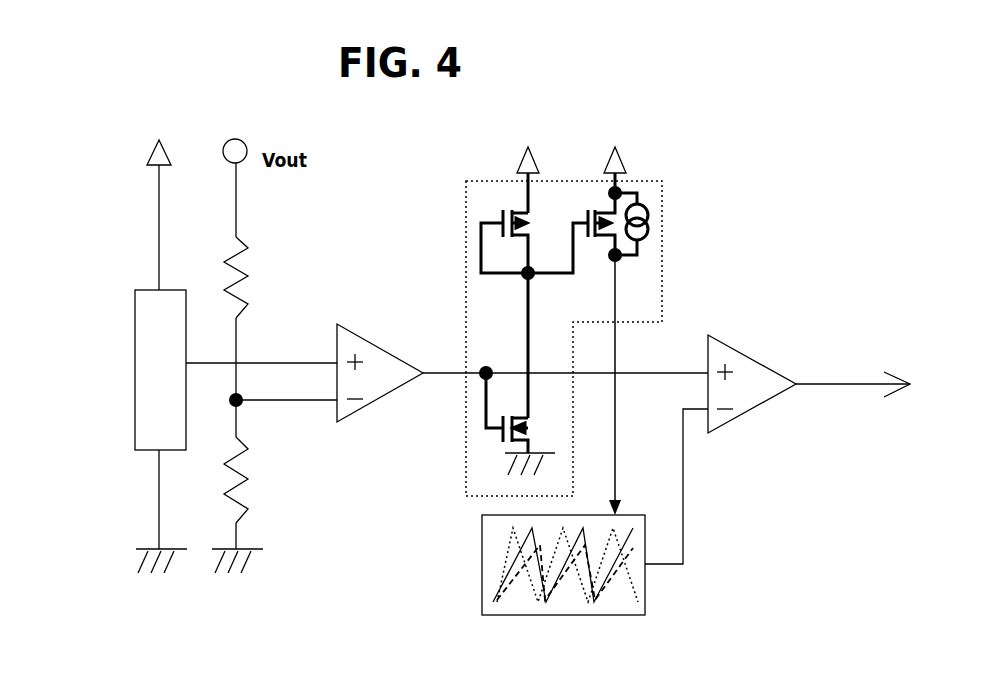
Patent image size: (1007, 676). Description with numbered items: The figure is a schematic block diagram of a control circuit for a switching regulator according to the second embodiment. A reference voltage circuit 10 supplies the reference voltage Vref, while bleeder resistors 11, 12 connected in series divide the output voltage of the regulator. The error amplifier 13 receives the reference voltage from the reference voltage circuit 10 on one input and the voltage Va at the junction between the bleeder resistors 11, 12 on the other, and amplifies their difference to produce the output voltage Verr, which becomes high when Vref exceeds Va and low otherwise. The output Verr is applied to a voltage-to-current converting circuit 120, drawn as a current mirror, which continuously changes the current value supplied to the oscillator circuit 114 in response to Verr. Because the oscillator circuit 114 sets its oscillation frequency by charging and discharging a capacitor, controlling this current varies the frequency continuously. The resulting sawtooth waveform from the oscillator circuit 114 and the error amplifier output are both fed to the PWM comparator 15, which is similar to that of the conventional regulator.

The reference voltage circuit 10 is at (136, 277).
The bleeder resistor 11 is at (250, 287).
The bleeder resistor 12 is at (250, 487).
The error amplifier 13 is at (373, 410).
The voltage-to-current converting circuit 120 is at (468, 318).
The oscillator circuit 114 is at (632, 590).
The PWM comparator 15 is at (753, 408).